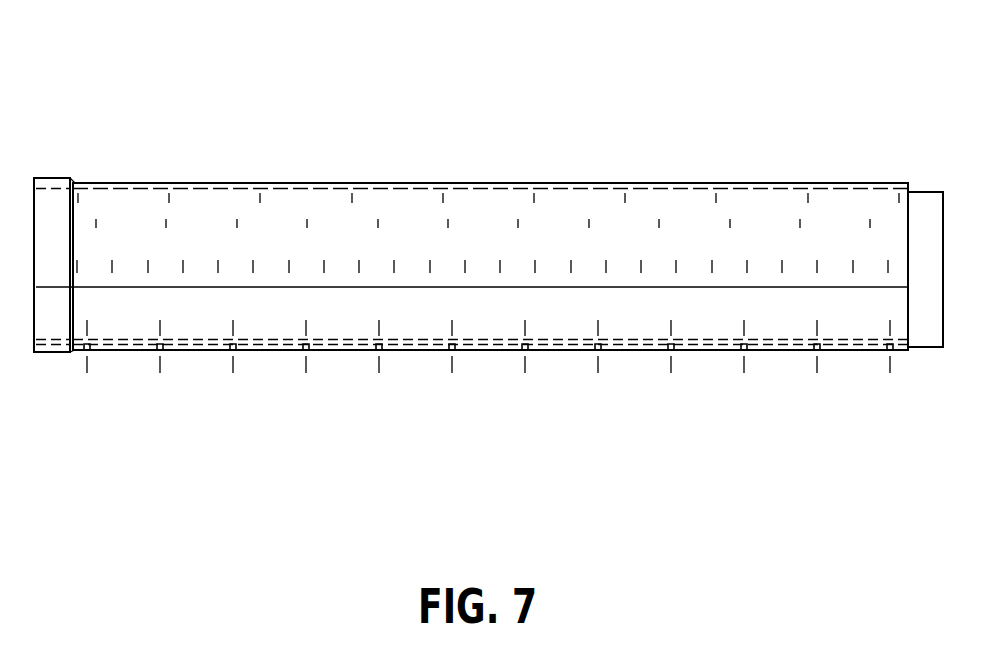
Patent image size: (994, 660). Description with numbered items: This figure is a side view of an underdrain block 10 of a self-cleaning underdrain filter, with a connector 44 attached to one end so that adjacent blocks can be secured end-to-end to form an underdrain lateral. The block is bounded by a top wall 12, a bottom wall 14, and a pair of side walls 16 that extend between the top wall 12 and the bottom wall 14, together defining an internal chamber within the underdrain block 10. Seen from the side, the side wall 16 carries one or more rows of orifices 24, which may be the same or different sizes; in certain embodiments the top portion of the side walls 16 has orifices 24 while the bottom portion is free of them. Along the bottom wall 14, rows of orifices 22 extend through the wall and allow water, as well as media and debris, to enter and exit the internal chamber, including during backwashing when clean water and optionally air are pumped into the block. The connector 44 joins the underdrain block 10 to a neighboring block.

The underdrain block 10 is at (740, 103).
The top wall 12 is at (593, 185).
The bottom wall 14 is at (132, 350).
The side walls 16 is at (205, 213).
The orifices 22 is at (233, 352).
The orifices 24 is at (378, 228).
The connector 44 is at (45, 207).